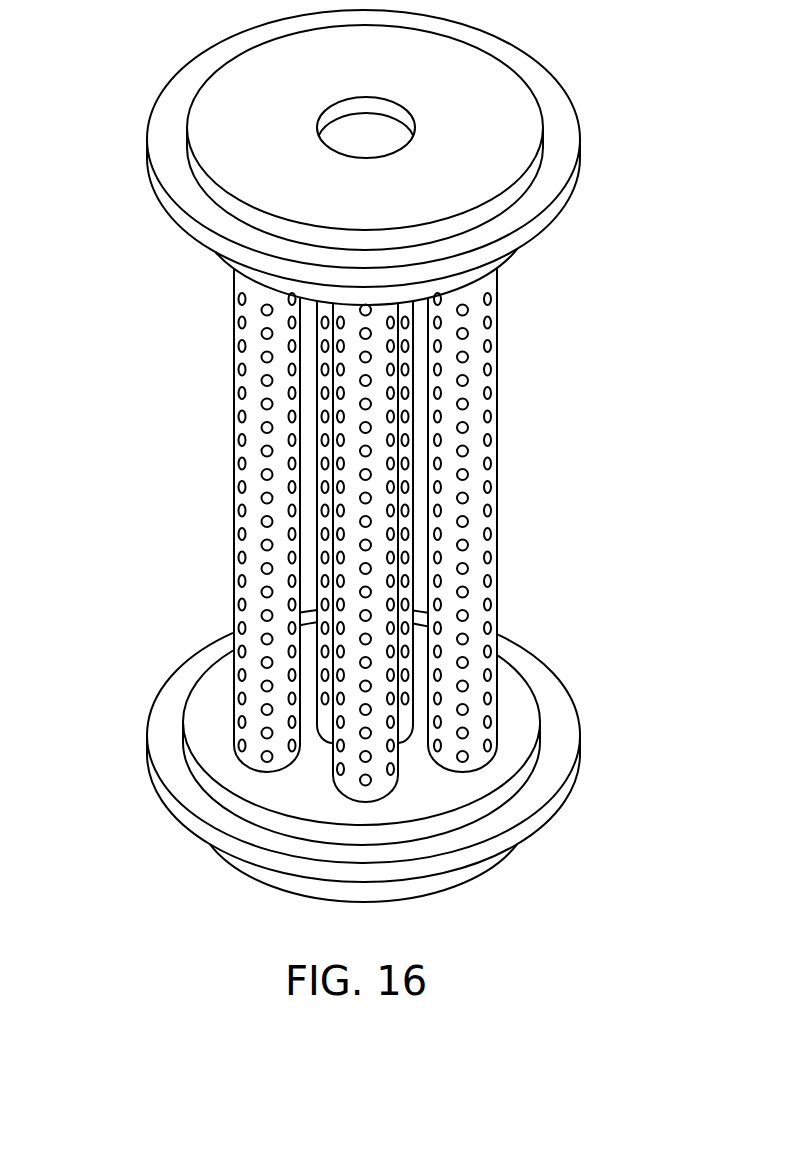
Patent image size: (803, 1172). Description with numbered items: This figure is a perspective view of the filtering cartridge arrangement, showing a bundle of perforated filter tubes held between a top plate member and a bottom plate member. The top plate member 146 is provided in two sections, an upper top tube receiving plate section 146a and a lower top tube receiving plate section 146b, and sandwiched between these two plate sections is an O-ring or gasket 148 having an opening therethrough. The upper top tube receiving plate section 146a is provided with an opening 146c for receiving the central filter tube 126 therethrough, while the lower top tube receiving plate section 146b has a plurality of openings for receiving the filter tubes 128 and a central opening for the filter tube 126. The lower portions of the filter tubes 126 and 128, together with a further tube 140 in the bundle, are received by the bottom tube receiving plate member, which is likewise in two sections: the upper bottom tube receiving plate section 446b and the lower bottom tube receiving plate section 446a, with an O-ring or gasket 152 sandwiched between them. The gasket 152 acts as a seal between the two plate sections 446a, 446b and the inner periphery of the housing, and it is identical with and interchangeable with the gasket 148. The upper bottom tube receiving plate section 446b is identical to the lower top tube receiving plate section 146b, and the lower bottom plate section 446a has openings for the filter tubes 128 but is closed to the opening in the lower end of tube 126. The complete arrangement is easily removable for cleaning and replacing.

The top plate member 146 is at (352, 159).
The upper top tube receiving plate section 146a is at (487, 90).
The lower top tube receiving plate section 146b is at (503, 257).
The opening 146c is at (357, 118).
The O-ring or gasket 148 is at (560, 137).
The filter tube 126 is at (405, 395).
The filter tubes 128 is at (497, 453).
The perforated tube 140 is at (234, 400).
The O-ring or gasket 152 is at (560, 728).
The lower bottom tube receiving plate section 446a is at (445, 880).
The upper bottom tube receiving plate section 446b is at (513, 693).